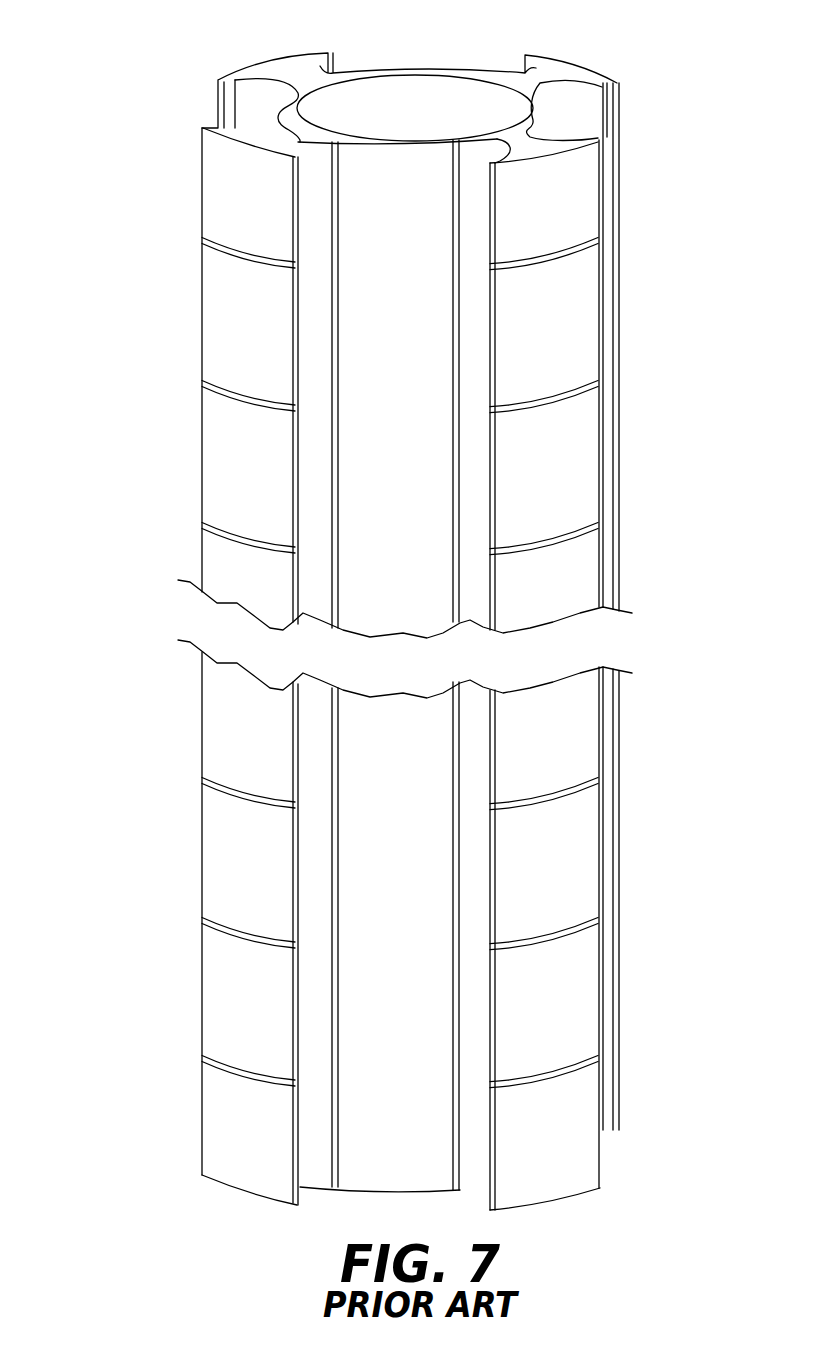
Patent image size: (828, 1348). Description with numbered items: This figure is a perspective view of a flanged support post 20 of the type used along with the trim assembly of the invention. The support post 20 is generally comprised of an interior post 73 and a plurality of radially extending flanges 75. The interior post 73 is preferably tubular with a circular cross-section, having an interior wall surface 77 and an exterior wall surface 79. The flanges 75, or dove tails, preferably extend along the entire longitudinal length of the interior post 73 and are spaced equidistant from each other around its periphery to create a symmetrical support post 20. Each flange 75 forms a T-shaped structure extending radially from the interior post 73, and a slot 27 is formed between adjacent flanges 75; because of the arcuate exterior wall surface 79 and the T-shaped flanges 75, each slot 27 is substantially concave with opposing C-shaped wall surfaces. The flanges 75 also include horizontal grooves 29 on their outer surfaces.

The support post 20 is at (166, 286).
The slot 27 is at (500, 77).
The horizontal grooves 29 is at (577, 250).
The interior post 73 is at (542, 107).
The flanges 75 is at (253, 67).
The interior wall surface 77 is at (482, 85).
The exterior wall surface 79 is at (407, 72).